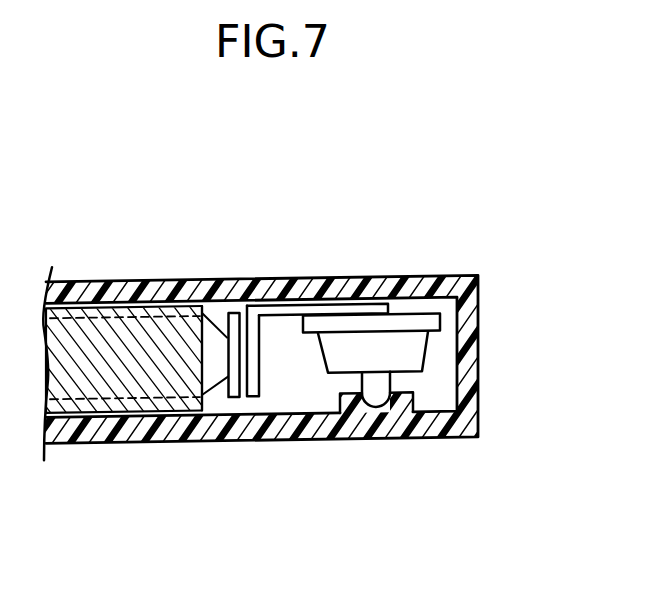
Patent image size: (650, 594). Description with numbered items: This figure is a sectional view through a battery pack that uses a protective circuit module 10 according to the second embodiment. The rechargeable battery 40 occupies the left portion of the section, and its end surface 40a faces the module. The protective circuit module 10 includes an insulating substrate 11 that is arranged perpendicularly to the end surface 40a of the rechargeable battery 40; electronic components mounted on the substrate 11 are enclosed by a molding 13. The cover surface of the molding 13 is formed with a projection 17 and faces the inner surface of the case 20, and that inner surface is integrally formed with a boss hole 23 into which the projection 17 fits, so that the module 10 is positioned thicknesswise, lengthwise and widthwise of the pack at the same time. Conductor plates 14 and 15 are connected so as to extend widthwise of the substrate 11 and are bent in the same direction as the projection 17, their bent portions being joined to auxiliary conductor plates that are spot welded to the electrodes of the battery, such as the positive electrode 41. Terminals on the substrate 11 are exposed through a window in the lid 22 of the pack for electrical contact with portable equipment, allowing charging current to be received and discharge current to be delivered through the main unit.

The protective circuit module 10 is at (431, 314).
The substrate 11 is at (403, 322).
The molding 13 is at (338, 350).
The conductor plate 14 is at (236, 398).
The conductor plate 15 is at (316, 306).
The projection 17 is at (380, 381).
The case 20 is at (480, 360).
The lid 22 is at (349, 301).
The boss hole 23 is at (380, 380).
The rechargeable battery 40 is at (127, 380).
The end surface 40a is at (205, 409).
The positive electrode 41 is at (215, 348).